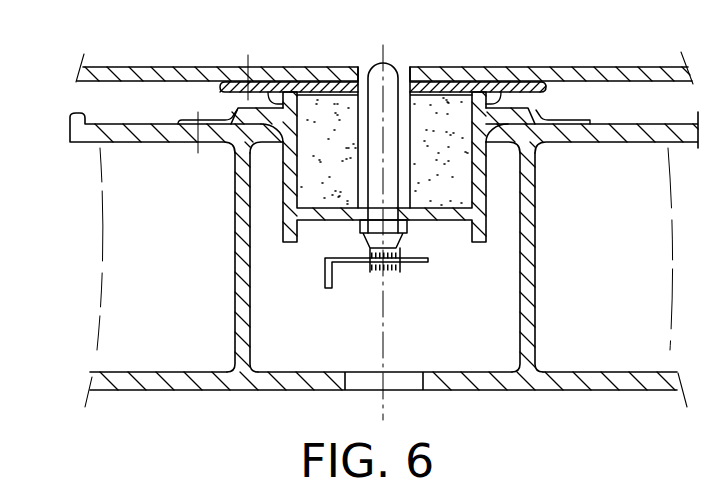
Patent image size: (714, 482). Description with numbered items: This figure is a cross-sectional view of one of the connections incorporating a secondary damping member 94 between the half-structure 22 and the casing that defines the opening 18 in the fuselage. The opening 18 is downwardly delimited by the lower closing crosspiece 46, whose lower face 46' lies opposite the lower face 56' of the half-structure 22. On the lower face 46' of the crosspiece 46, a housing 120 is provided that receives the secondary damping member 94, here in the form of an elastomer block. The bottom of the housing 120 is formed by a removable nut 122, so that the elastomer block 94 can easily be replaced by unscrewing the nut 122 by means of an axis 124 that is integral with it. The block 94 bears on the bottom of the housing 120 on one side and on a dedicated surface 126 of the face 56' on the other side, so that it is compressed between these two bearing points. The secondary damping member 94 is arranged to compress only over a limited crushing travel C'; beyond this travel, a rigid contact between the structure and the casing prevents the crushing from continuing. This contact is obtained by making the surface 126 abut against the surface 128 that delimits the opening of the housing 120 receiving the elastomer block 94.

The lower face of the half-structure 56' is at (384, 53).
The lower face of the casing 46' is at (359, 120).
The limited crushing travel C' is at (272, 69).
The opening 18 is at (183, 113).
The half-structure 22 is at (350, 50).
The dedicated surface 126 is at (492, 97).
The surface delimiting the opening of the housing 128 is at (535, 114).
The housing 120 is at (300, 188).
The secondary damping member 94 is at (463, 193).
The axis 124 is at (366, 240).
The removable nut 122 is at (441, 218).
The lower closing crosspiece 46 is at (383, 289).